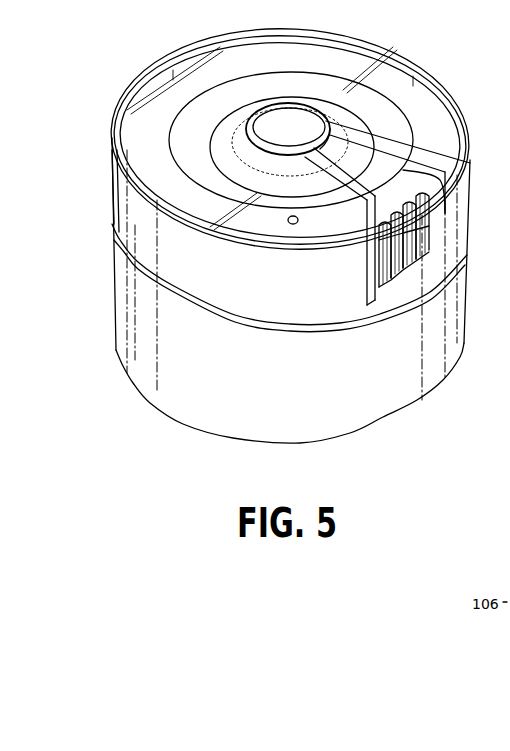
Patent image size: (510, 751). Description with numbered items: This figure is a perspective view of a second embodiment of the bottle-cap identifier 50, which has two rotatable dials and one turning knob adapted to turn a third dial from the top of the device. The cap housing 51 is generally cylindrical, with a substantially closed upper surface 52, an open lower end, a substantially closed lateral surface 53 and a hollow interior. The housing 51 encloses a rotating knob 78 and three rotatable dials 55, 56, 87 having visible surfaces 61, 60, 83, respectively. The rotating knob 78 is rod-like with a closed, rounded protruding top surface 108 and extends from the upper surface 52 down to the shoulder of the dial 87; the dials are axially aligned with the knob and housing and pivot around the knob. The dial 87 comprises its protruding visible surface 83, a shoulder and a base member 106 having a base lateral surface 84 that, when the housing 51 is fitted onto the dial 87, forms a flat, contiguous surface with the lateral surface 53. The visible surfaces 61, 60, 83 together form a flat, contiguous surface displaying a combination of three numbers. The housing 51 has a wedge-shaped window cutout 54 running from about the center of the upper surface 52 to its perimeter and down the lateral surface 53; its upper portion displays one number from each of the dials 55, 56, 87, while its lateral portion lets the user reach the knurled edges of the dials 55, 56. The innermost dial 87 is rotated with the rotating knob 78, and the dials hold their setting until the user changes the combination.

The cap assembly 50 is at (112, 94).
The cap housing 51 is at (120, 219).
The upper surface 52 is at (443, 135).
The lateral surface 53 is at (204, 267).
The window cutout 54 is at (448, 180).
The rotatable dial 55 is at (417, 217).
The rotatable dial 56 is at (417, 262).
The visible surface 60 is at (360, 152).
The visible surface 61 is at (392, 168).
The rotating knob 78 is at (302, 122).
The visible surface 83 is at (295, 222).
The base lateral surface 84 is at (226, 405).
The rotatable dial 87 is at (116, 368).
The base member 106 is at (120, 298).
The top surface 108 is at (280, 122).